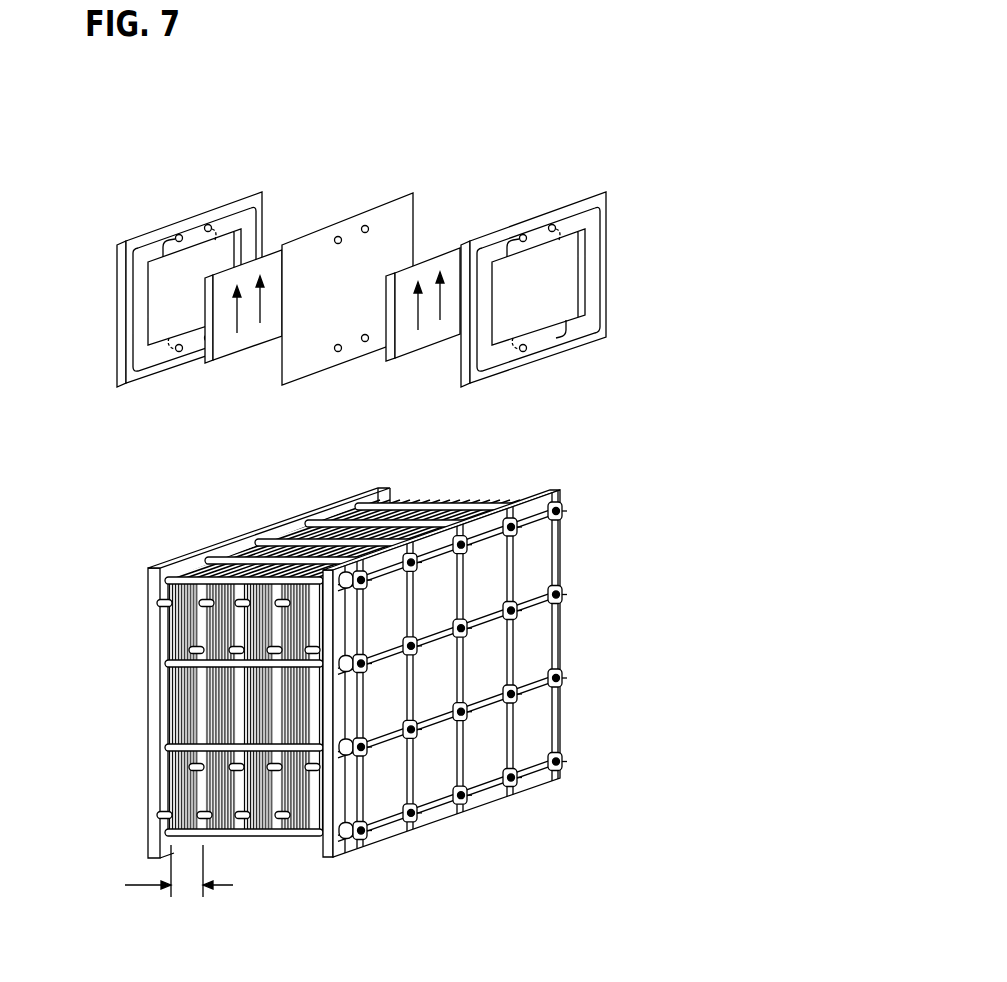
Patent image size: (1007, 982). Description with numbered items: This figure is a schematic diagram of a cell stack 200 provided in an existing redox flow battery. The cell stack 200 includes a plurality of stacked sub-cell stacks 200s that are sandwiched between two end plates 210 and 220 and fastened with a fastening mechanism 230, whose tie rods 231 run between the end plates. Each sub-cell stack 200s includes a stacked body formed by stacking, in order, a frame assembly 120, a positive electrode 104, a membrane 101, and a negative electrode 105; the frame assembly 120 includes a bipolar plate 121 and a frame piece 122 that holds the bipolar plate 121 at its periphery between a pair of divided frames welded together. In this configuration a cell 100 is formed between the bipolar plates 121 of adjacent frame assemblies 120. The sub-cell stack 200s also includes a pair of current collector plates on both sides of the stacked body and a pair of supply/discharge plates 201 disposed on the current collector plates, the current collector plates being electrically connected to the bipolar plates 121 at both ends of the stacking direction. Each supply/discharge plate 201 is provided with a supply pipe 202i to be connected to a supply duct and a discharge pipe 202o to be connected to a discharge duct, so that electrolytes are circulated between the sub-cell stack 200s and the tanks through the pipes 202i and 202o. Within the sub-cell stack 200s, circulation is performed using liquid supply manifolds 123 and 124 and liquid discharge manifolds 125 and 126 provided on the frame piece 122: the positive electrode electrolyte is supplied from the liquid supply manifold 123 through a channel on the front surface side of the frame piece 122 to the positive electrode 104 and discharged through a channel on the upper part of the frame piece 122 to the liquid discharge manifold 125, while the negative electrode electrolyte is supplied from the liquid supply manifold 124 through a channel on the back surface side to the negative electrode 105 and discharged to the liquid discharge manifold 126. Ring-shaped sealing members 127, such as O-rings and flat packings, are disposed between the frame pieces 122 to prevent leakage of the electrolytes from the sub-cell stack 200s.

The cell 100 is at (496, 289).
The membrane 101 is at (375, 204).
The positive electrode 104 is at (258, 346).
The negative electrode 105 is at (441, 342).
The frame assembly 120 is at (116, 290).
The bipolar plate 121 is at (567, 247).
The frame piece 122 is at (592, 286).
The liquid supply manifold 123 is at (558, 340).
The liquid supply manifold 124 is at (525, 351).
The liquid discharge manifold 125 is at (523, 234).
The liquid discharge manifold 126 is at (553, 224).
The sealing member 127 is at (602, 207).
The cell stack 200 is at (364, 707).
The sub-cell stack 200s is at (179, 889).
The supply/discharge plate 201 is at (172, 720).
The discharge pipe 202o is at (192, 651).
The supply pipe 202i is at (160, 815).
The end plate 210 is at (345, 845).
The end plate 220 is at (150, 583).
The fastening mechanism 230 is at (287, 541).
The tie rod 231 is at (296, 836).